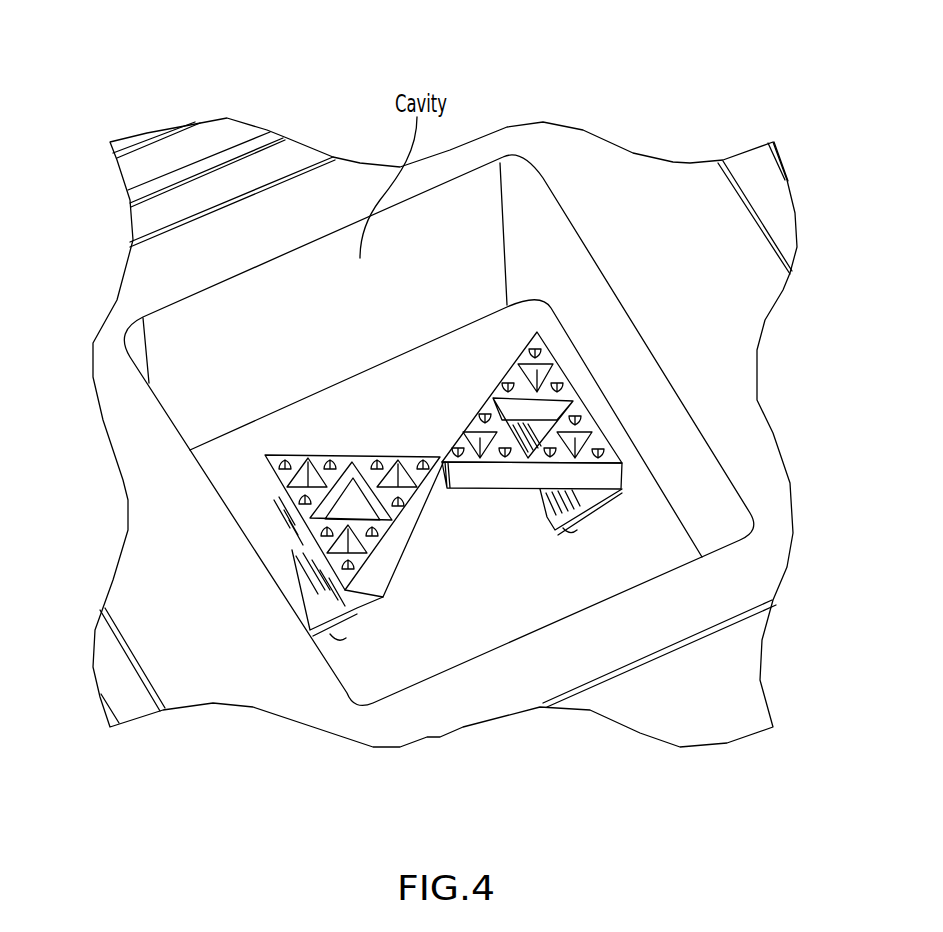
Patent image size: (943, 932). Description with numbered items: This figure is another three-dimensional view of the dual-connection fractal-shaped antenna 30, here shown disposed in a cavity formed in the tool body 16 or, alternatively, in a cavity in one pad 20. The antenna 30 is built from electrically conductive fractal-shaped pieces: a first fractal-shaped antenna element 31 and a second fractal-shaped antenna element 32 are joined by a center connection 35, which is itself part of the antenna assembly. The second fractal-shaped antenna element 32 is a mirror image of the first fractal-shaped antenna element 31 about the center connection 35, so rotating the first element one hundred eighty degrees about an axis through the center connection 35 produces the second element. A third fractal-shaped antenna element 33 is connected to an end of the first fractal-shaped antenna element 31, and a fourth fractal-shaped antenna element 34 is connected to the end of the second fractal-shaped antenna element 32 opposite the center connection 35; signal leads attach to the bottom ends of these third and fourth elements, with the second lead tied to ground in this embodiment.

The dual-connection fractal-shaped antenna 30 is at (373, 327).
The first fractal-shaped antenna element 31 is at (340, 458).
The second fractal-shaped antenna element 32 is at (485, 409).
The third fractal-shaped antenna element 33 is at (378, 597).
The fourth fractal-shaped antenna element 34 is at (603, 507).
The center connection 35 is at (444, 489).
The tool body 16 is at (463, 693).
The pad 20 is at (445, 465).